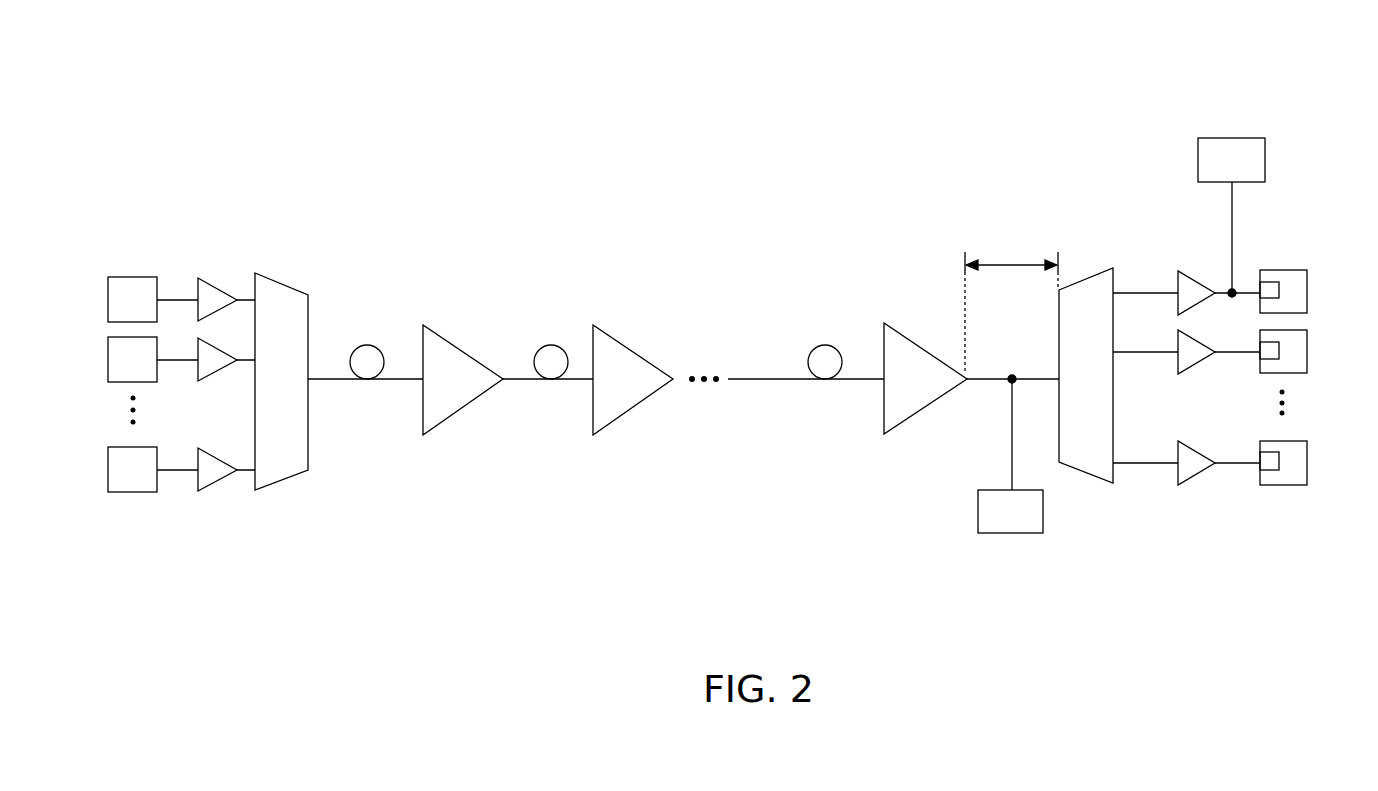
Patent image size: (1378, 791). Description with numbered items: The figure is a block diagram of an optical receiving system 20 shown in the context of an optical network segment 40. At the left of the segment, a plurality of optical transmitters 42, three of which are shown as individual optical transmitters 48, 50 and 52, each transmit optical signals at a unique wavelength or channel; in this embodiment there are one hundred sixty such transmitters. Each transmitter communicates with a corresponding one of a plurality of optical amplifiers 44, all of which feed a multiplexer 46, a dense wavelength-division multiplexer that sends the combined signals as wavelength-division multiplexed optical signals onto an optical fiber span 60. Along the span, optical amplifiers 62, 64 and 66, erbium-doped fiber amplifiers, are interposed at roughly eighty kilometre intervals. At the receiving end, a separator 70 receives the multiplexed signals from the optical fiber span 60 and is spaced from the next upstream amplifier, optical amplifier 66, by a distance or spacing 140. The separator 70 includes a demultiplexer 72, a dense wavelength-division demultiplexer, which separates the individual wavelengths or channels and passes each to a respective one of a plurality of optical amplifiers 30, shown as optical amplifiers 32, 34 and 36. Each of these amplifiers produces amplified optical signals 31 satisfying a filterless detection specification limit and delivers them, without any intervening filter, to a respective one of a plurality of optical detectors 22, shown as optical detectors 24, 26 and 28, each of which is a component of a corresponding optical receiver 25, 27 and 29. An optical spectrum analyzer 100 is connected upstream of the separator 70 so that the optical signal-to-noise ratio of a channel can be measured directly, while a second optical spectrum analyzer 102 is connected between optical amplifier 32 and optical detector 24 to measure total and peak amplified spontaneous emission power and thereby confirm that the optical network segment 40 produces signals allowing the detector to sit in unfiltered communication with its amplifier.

The optical receiving system 20 is at (1102, 172).
The plurality of optical detectors 22 is at (1283, 238).
The optical detector 24 is at (1275, 282).
The optical receiver 25 is at (1307, 303).
The optical detector 26 is at (1278, 342).
The optical receiver 27 is at (1307, 372).
The optical detector 28 is at (1278, 452).
The optical receiver 29 is at (1307, 482).
The plurality of optical amplifiers 30 is at (1198, 258).
The amplified optical signals 31 is at (1237, 478).
The optical amplifier 32 is at (1177, 298).
The optical amplifier 34 is at (1177, 362).
The optical amplifier 36 is at (1182, 488).
The optical network segment 40 is at (937, 125).
The plurality of optical transmitters 42 is at (128, 230).
The plurality of optical amplifiers 44 is at (213, 230).
The multiplexer 46 is at (283, 278).
The optical transmitter 48 is at (108, 283).
The optical transmitter 50 is at (108, 370).
The optical transmitter 52 is at (108, 483).
The optical fiber span 60 is at (563, 262).
The optical amplifier 62 is at (445, 333).
The optical amplifier 64 is at (617, 333).
The optical amplifier 66 is at (897, 325).
The separator 70 is at (1088, 258).
The demultiplexer 72 is at (1098, 482).
The optical spectrum analyzer 100 is at (992, 490).
The optical spectrum analyzer 102 is at (1258, 138).
The distance or spacing 140 is at (1020, 262).